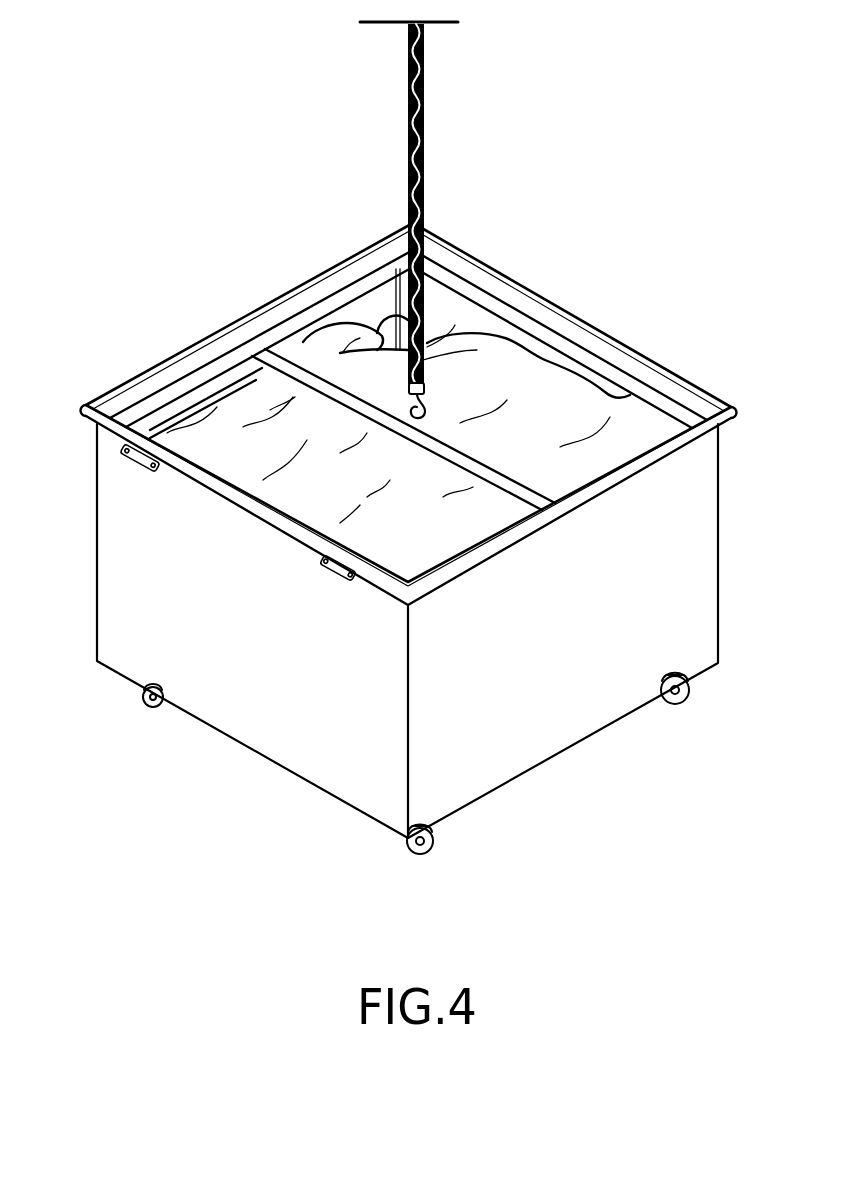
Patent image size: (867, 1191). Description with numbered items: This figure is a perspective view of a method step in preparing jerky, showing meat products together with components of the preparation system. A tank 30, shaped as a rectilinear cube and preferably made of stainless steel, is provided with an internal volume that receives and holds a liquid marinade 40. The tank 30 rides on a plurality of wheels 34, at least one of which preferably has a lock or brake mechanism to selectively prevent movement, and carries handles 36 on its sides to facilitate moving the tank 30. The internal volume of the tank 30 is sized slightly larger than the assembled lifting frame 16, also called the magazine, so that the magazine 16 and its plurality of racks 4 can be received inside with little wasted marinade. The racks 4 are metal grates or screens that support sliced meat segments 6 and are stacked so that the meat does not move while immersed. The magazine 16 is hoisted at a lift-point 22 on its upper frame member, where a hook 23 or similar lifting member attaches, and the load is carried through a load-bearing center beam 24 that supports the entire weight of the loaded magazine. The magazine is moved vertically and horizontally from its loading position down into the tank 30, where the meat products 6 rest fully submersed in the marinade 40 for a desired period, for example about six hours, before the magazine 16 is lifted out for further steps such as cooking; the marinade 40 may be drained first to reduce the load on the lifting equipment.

The rack 4 is at (435, 335).
The meat segments 6 is at (395, 318).
The lifting frame 16 is at (681, 400).
The lift-point 22 is at (418, 421).
The hook 23 is at (424, 393).
The center beam 24 is at (488, 450).
The tank 30 is at (540, 753).
The wheels 34 is at (690, 674).
The handles 36 is at (146, 466).
The liquid marinade 40 is at (243, 392).